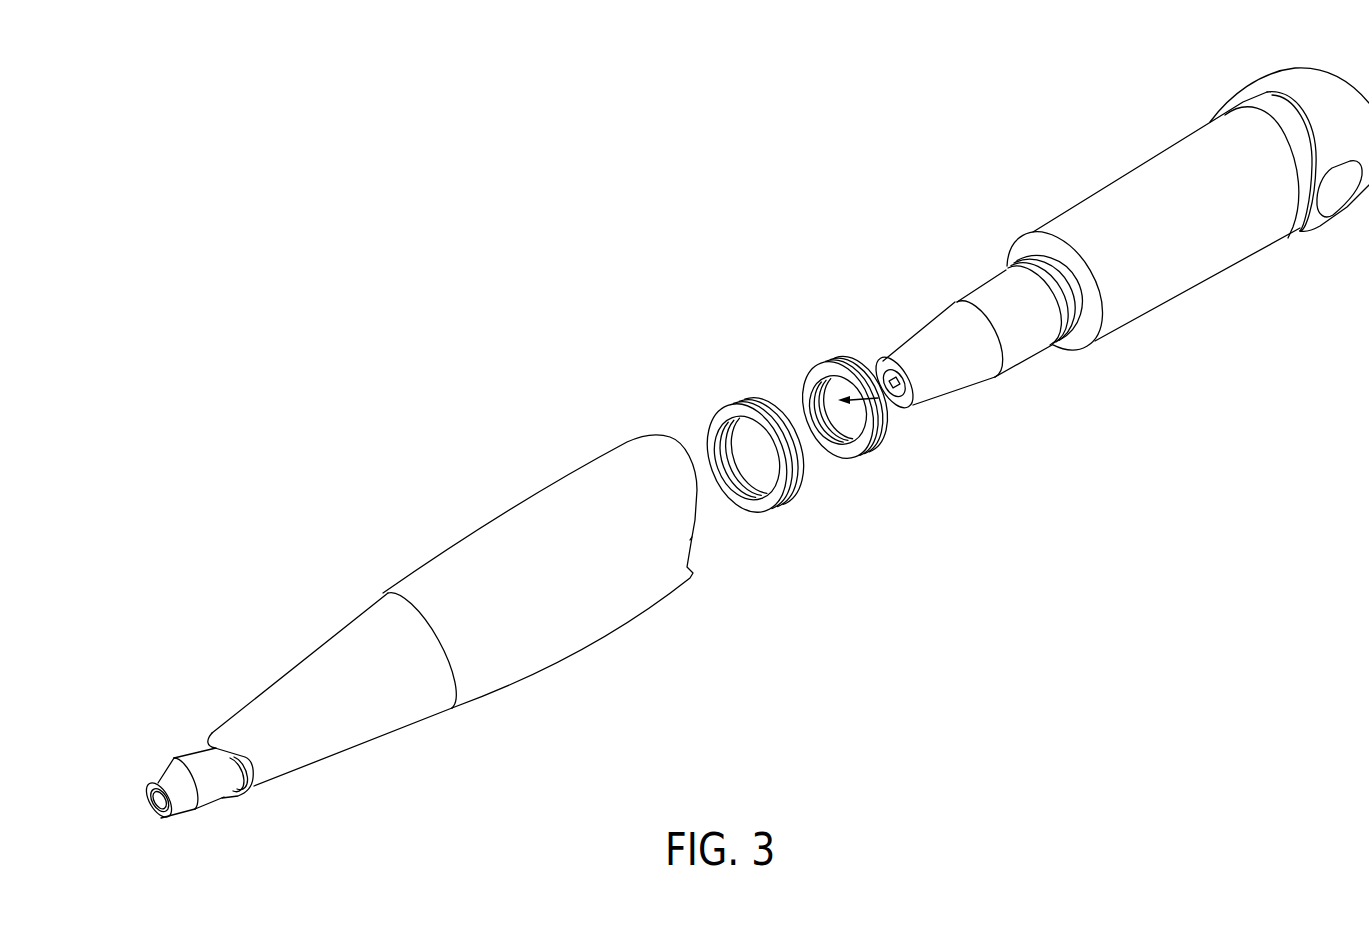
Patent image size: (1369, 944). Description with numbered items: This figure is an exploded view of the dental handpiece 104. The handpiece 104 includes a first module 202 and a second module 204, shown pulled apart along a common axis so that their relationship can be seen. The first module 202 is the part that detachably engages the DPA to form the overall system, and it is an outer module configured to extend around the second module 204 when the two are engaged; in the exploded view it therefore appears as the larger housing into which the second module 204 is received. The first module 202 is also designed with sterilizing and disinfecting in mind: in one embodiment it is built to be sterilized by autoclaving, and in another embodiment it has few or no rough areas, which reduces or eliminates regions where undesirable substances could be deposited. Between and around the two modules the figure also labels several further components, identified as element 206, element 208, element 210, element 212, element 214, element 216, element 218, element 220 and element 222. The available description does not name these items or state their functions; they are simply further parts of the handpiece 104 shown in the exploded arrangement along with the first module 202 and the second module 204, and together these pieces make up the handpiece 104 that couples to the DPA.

The dental handpiece 104 is at (547, 248).
The first module 202 is at (450, 540).
The second module 204 is at (1110, 178).
The tip of connector nose 206 is at (880, 367).
The writing tip 208 is at (143, 796).
The coupling ring assembly 210 is at (915, 452).
The first ring 212 is at (733, 408).
The second ring 214 is at (897, 428).
The inner surface of second ring 216 is at (817, 385).
The connector nose 218 is at (933, 324).
The seam of first body portion 220 is at (692, 537).
The clip loop 222 is at (1307, 115).